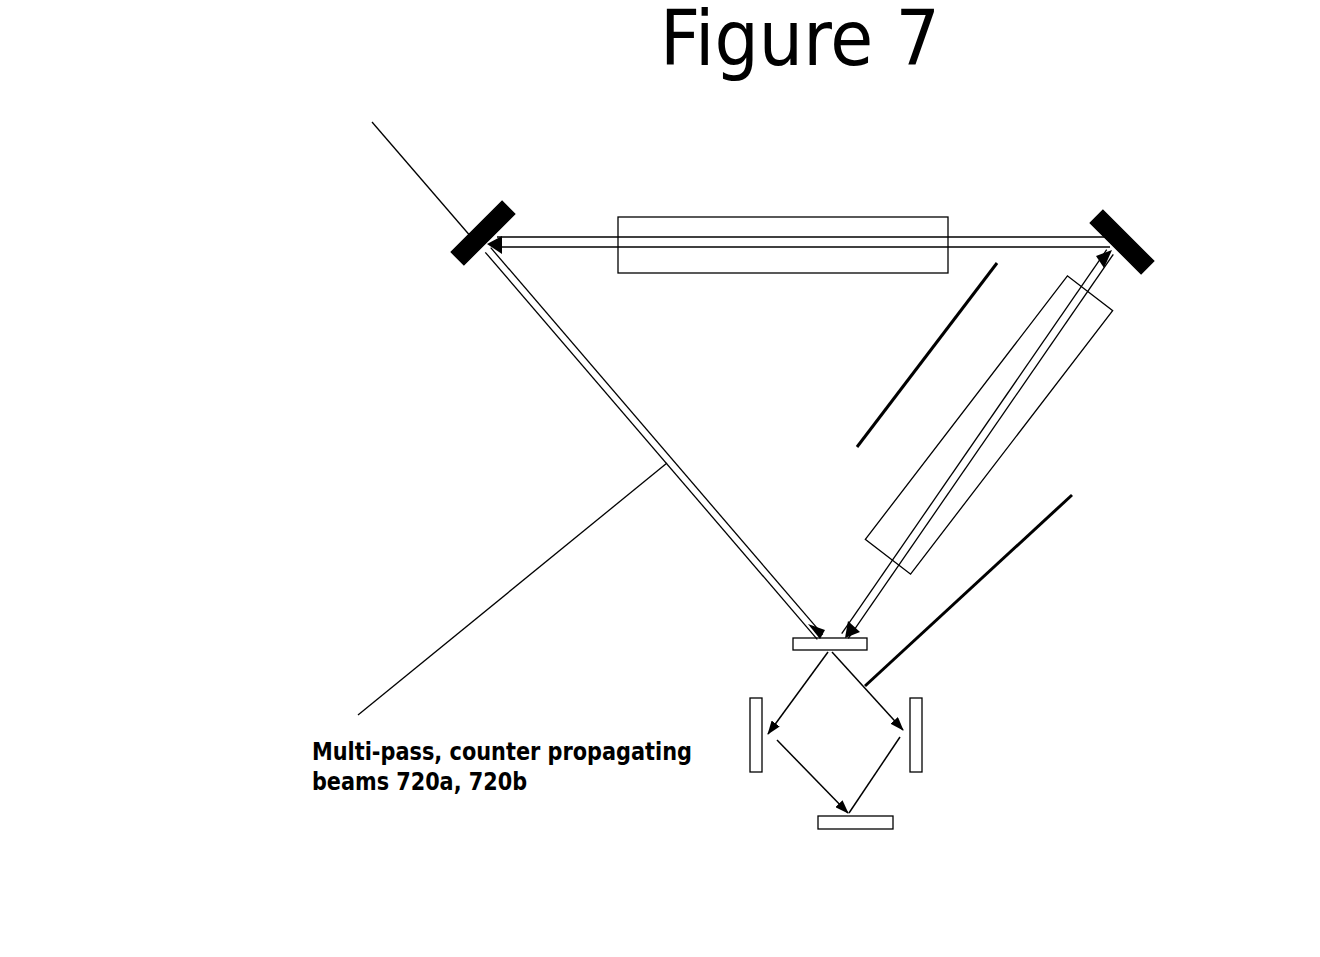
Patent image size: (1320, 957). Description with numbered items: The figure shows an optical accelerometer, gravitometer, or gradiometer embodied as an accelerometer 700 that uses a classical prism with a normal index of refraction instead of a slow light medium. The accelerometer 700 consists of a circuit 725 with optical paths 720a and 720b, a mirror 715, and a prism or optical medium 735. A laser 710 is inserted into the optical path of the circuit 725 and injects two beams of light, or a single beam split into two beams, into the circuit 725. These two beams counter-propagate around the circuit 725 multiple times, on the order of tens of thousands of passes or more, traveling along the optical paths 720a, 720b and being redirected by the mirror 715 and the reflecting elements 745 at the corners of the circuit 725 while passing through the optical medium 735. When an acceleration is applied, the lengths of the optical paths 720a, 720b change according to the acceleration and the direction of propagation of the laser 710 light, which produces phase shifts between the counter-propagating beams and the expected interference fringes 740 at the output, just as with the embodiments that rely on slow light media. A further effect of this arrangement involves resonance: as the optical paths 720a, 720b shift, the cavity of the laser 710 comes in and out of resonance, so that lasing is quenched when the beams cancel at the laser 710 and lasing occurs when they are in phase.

The accelerometer 700 is at (487, 218).
The laser 710 is at (1040, 405).
The mirror 715 is at (827, 665).
The optical path 720a is at (582, 370).
The optical path 720b is at (570, 332).
The circuit 725 is at (694, 450).
The prism or optical medium 735 is at (758, 226).
The interference fringes 740 is at (908, 820).
The mirrors 745 is at (1147, 256).